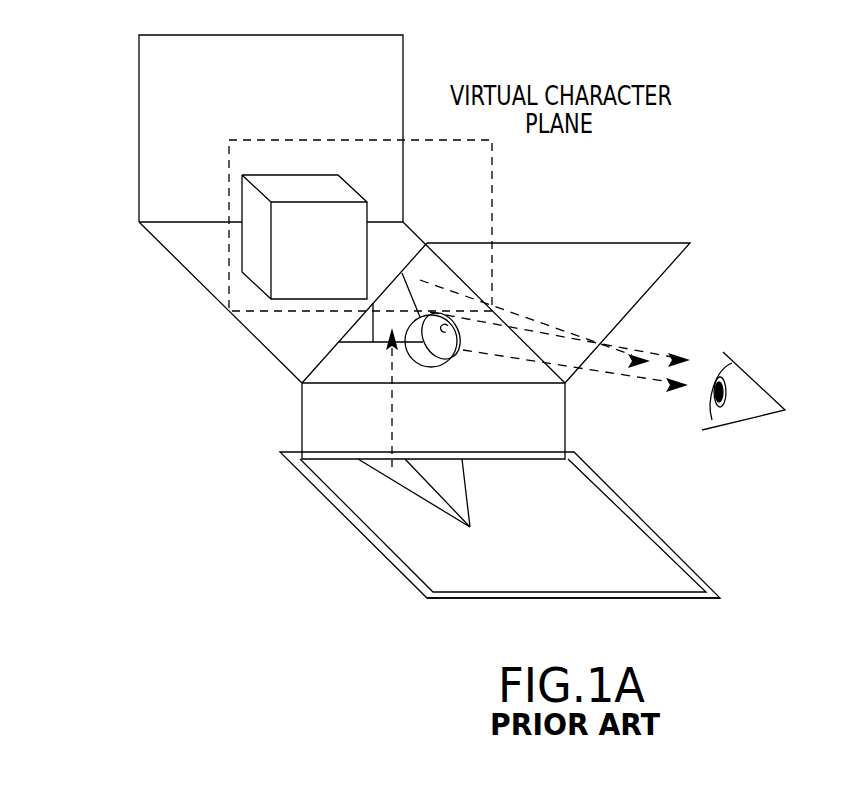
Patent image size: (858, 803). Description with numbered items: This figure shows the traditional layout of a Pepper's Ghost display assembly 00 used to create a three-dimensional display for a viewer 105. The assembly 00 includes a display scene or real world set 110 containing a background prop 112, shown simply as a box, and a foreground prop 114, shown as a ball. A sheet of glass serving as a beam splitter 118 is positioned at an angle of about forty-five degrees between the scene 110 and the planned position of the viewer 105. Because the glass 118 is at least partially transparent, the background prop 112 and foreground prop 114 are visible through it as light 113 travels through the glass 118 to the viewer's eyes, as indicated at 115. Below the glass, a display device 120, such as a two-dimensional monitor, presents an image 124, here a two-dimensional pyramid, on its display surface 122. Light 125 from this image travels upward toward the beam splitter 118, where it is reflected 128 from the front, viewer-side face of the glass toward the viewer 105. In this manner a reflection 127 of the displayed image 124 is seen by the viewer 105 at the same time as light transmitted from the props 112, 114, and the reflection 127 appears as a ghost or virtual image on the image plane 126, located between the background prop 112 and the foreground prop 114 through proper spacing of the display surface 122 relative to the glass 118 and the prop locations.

The Pepper's Ghost display assembly 00 is at (122, 165).
The display scene 110 is at (163, 269).
The background prop 112 is at (242, 210).
The light 113 is at (380, 275).
The image plane 126 is at (494, 166).
The reflection 127 is at (405, 292).
The glass 118 is at (682, 255).
The foreground prop 114 is at (457, 354).
The reflected light 128 is at (550, 322).
The light to viewer 115 is at (604, 375).
The light 125 is at (410, 413).
The image 124 is at (420, 497).
The display device 120 is at (722, 565).
The display surface 122 is at (452, 583).
The viewer 105 is at (766, 452).